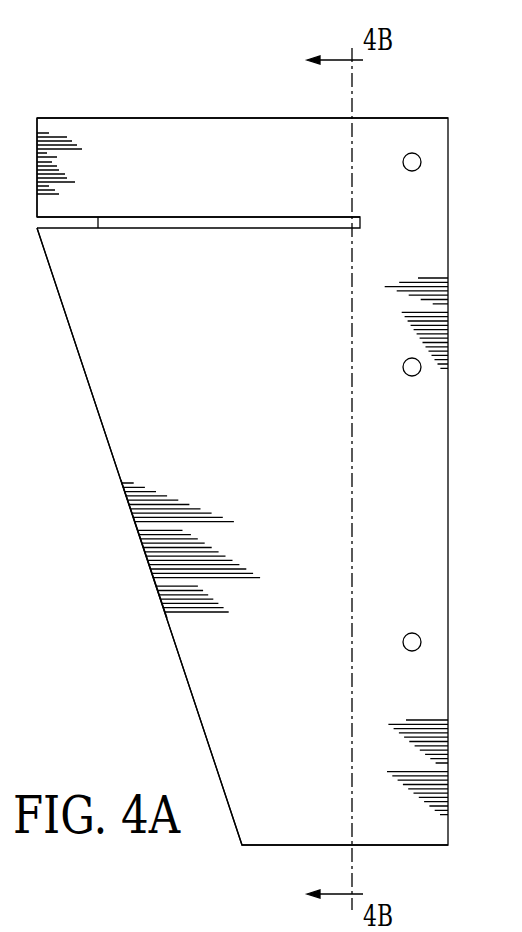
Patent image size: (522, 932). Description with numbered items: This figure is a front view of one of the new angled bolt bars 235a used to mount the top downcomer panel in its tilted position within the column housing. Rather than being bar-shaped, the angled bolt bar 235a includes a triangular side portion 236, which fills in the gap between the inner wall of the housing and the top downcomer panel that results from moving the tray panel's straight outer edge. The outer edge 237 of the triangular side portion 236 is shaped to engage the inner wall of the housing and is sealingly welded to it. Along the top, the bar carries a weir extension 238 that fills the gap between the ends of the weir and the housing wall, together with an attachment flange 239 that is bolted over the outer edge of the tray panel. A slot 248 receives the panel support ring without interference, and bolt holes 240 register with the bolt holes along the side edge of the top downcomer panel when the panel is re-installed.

The angled bolt bar 235a is at (433, 93).
The triangular side portion 236 is at (262, 404).
The outer edge 237 is at (133, 547).
The weir extension 238 is at (199, 128).
The attachment flange 239 is at (243, 221).
The bolt hole 240 is at (413, 360).
The slot 248 is at (99, 222).